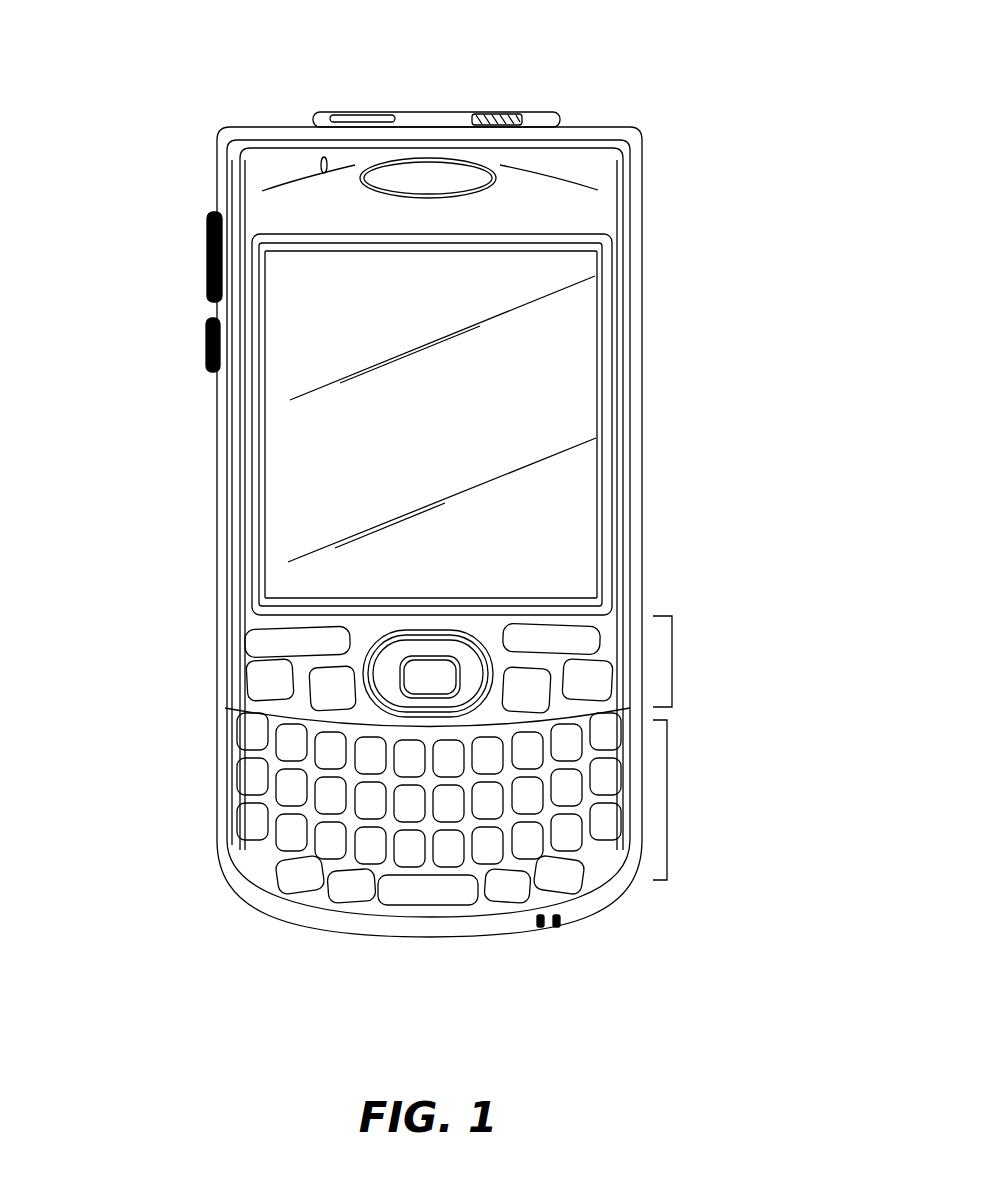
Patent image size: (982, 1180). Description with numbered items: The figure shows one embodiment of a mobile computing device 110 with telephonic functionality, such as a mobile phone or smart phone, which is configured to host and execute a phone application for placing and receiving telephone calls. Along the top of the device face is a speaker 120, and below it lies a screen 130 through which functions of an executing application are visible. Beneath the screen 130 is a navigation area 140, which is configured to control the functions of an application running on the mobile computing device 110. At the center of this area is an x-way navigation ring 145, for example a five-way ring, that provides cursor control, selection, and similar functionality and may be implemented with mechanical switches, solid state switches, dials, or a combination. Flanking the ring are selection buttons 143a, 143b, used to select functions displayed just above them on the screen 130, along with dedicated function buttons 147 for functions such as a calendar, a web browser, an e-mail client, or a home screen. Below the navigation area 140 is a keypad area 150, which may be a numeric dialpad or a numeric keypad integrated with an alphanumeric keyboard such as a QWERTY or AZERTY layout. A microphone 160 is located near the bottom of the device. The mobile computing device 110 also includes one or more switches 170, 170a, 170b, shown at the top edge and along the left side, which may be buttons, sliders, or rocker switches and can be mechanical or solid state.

The mobile computing device 110 is at (640, 142).
The speaker 120 is at (428, 166).
The screen 130 is at (565, 379).
The navigation area 140 is at (677, 658).
The selection button 143a is at (266, 631).
The selection button 143b is at (575, 642).
The navigation ring 145 is at (468, 655).
The dedicated function button 147 is at (262, 680).
The keypad area 150 is at (672, 800).
The microphone 160 is at (556, 938).
The switch 170 is at (505, 104).
The switch 170a is at (205, 239).
The switch 170b is at (205, 342).